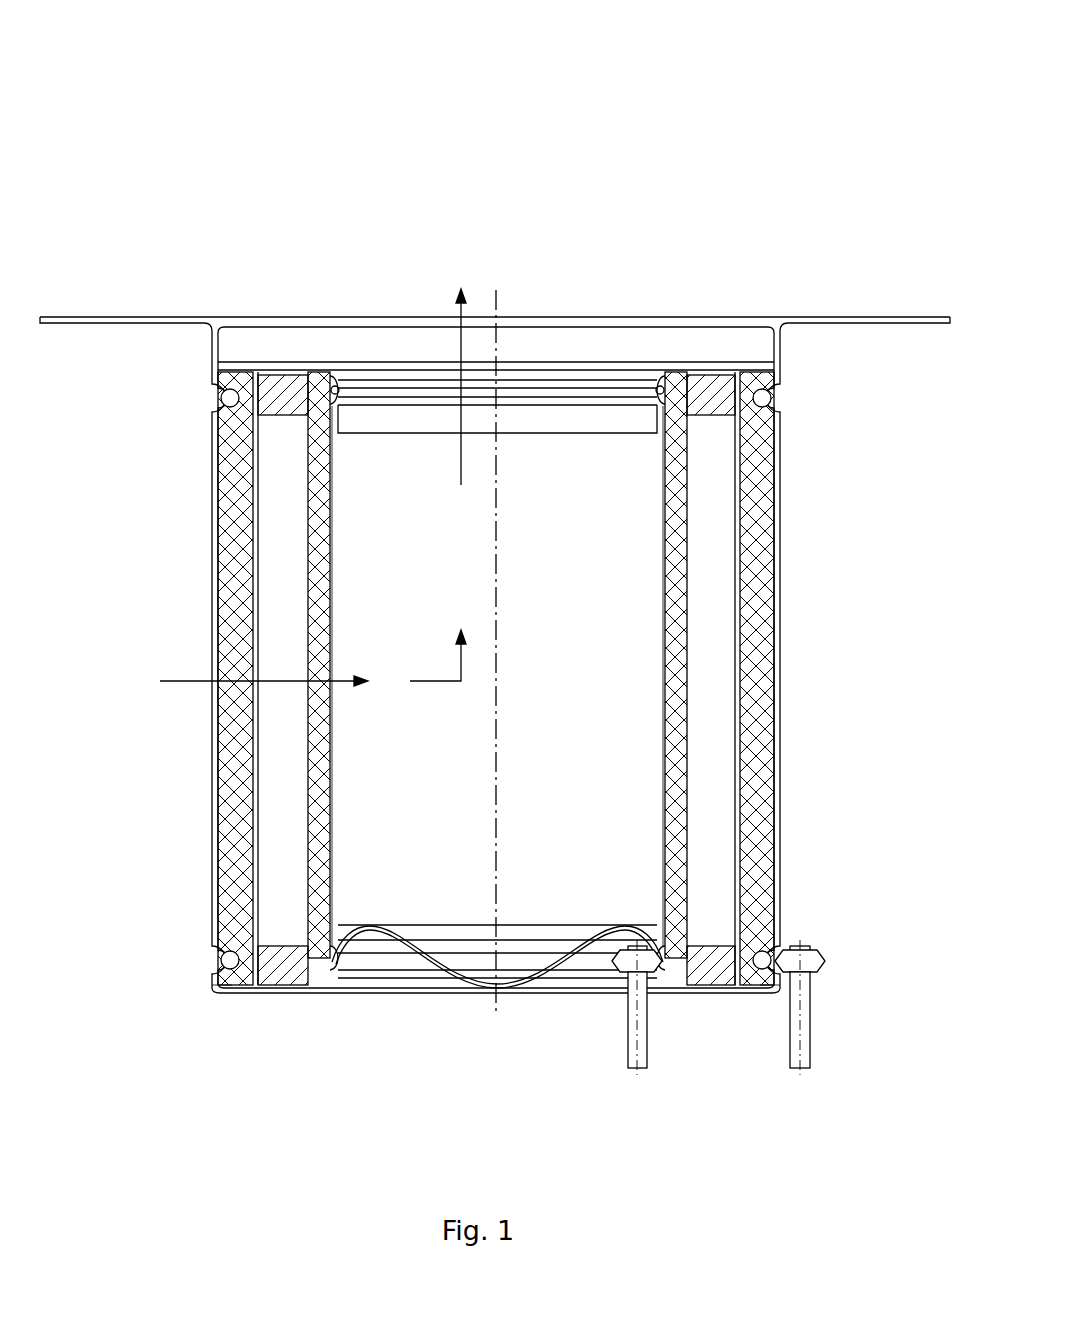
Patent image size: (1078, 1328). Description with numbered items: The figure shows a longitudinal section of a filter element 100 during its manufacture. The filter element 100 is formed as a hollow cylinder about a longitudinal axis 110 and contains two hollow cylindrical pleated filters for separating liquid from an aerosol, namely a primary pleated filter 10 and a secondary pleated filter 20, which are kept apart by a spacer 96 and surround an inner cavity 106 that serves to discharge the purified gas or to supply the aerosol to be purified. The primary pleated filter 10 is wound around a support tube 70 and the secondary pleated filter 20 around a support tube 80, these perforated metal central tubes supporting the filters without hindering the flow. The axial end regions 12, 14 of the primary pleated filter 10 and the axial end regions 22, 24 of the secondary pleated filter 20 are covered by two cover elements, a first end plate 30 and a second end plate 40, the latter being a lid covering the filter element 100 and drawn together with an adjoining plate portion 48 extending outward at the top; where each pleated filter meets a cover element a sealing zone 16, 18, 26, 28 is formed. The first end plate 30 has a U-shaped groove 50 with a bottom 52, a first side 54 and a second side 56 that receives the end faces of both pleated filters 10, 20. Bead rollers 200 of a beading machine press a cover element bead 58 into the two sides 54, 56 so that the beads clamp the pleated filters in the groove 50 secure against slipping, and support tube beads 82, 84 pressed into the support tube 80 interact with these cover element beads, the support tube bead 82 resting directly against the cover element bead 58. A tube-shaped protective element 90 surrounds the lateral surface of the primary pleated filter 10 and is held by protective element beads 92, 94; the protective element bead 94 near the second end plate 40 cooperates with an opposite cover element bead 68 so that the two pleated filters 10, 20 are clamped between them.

The filter element 100 is at (790, 185).
The longitudinal axis 110 is at (496, 292).
The primary pleated filter 10 is at (760, 606).
The axial end region of the primary pleated filter 12 is at (765, 992).
The axial end region of the primary pleated filter 14 is at (762, 370).
The sealing zone 16 is at (792, 940).
The sealing zone 18 is at (784, 398).
The secondary pleated filter 20 is at (675, 768).
The axial end region of the secondary pleated filter 22 is at (676, 992).
The axial end region of the secondary pleated filter 24 is at (668, 370).
The sealing zone 26 is at (657, 933).
The sealing zone 28 is at (652, 406).
The first end plate 30 is at (455, 985).
The second end plate 40 is at (858, 316).
The mounting plate 48 is at (136, 317).
The U-shaped groove 50 is at (711, 972).
The bottom 52 is at (266, 994).
The first side 54 is at (220, 938).
The second side 56 is at (326, 975).
The cover element bead 58 is at (214, 958).
The cover element bead 68 is at (338, 380).
The support tube 70 is at (740, 652).
The support tube 80 is at (665, 724).
The support tube bead 82 is at (340, 958).
The support tube bead 84 is at (358, 420).
The protective element 90 is at (780, 568).
The protective element bead 92 is at (214, 962).
The protective element bead 94 is at (214, 398).
The spacer 96 is at (290, 415).
The inner cavity 106 is at (580, 640).
The bead rollers 200 is at (628, 1040).